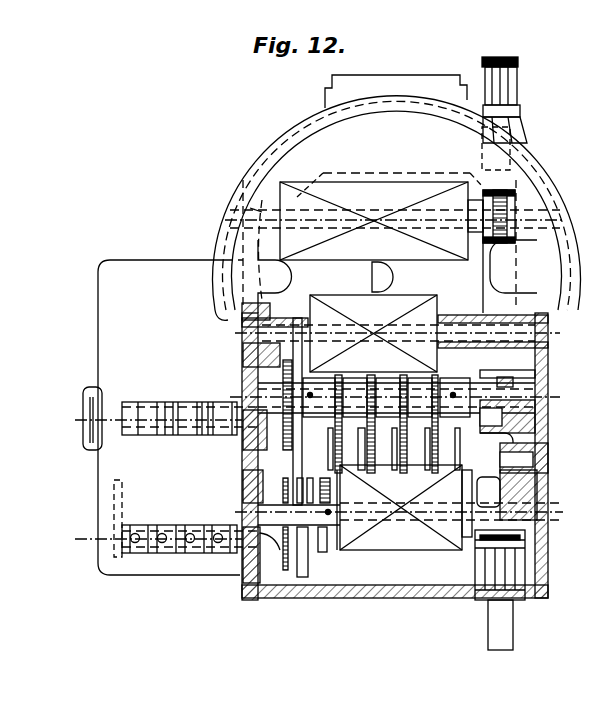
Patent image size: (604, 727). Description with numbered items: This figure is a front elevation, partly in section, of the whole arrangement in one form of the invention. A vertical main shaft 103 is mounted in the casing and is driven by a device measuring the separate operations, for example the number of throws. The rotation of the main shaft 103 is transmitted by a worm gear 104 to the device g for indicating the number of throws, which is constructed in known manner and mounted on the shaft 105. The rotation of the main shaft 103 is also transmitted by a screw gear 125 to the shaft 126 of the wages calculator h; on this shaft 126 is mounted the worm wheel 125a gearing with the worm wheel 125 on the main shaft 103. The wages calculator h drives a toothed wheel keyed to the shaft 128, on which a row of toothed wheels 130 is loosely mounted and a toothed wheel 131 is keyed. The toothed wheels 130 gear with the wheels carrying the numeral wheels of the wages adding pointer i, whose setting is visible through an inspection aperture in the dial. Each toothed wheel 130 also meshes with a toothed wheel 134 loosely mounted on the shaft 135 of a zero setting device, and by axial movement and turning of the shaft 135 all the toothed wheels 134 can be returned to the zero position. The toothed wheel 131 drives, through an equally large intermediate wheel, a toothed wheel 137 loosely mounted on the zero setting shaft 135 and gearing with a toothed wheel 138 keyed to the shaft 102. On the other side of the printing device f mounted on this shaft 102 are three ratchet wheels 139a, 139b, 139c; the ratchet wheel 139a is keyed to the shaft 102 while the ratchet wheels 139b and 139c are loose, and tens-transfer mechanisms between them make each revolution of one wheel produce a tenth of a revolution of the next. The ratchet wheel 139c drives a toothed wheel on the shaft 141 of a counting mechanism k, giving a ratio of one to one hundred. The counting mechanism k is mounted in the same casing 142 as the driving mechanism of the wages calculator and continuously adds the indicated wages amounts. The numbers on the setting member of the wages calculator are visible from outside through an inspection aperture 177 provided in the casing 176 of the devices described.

The device for indicating the number of throws g is at (340, 188).
The wages adding pointer i is at (345, 302).
The printing device f is at (393, 533).
The wages calculator h is at (168, 428).
The counting mechanism k is at (163, 552).
The shaft 102 is at (540, 512).
The main shaft 103 is at (503, 633).
The worm gear 104 is at (510, 195).
The shaft 105 is at (255, 210).
The screw gear 125 is at (532, 412).
The worm wheel 125a is at (525, 391).
The shaft 126 is at (100, 385).
The shaft 128 is at (238, 397).
The toothed wheels 130 is at (413, 374).
The toothed wheel 131 is at (520, 380).
The toothed wheel 134 is at (440, 472).
The shaft of the zero setting device 135 is at (527, 460).
The toothed wheel 137 is at (537, 436).
The toothed wheel 138 is at (543, 490).
The ratchet wheel 139a is at (322, 552).
The ratchet wheel 139b is at (302, 555).
The ratchet wheel 139c is at (285, 573).
The shaft 141 is at (273, 537).
The casing 142 is at (105, 517).
The casing 176 is at (117, 273).
The inspection aperture 177 is at (167, 400).